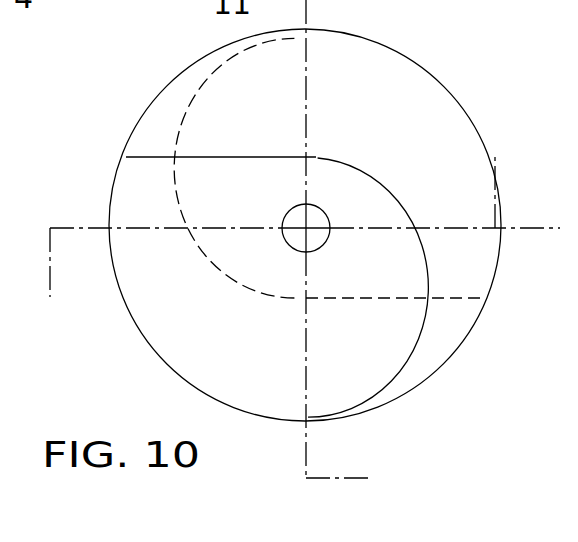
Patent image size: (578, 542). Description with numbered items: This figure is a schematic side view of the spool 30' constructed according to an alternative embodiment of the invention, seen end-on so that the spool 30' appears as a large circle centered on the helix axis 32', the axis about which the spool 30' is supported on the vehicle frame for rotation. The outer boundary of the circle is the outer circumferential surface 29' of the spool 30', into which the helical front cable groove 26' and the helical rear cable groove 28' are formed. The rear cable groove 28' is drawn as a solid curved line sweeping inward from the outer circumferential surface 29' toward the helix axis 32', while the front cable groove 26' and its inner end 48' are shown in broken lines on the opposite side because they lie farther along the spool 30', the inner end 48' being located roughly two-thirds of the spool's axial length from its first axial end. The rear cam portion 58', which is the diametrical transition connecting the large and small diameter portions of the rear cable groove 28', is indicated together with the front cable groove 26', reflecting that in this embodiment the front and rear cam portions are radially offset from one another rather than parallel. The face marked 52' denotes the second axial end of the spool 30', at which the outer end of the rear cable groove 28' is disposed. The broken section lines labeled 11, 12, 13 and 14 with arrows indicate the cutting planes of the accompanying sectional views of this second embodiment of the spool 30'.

The rear cable groove 28' is at (432, 241).
The outer circumferential surface 29' is at (435, 327).
The spool 30' is at (275, 225).
The helix axis 32' is at (407, 282).
The inner end of the front cable groove 48' is at (147, 159).
The front cable groove 26' is at (147, 168).
The rear cam portion 58' is at (166, 168).
The second axial end 52' is at (304, 237).
The section line 11 is at (166, 208).
The section line 12 is at (425, 114).
The section line 13 is at (433, 353).
The section line 14 is at (178, 353).